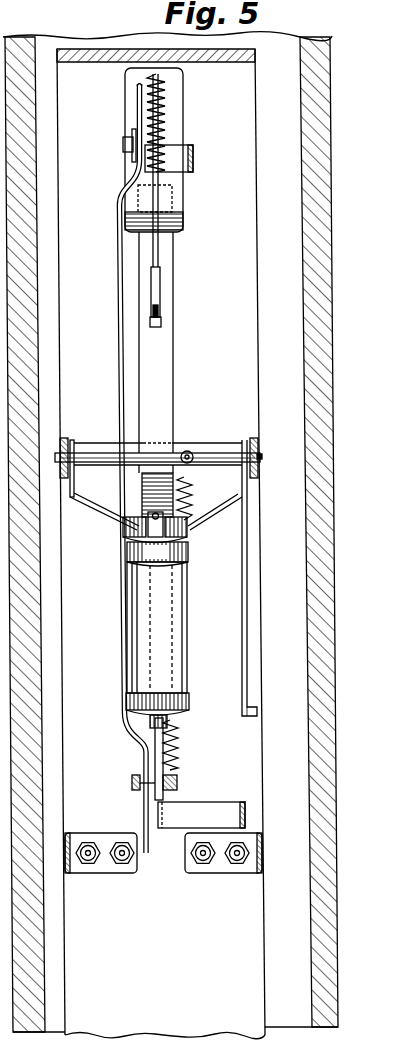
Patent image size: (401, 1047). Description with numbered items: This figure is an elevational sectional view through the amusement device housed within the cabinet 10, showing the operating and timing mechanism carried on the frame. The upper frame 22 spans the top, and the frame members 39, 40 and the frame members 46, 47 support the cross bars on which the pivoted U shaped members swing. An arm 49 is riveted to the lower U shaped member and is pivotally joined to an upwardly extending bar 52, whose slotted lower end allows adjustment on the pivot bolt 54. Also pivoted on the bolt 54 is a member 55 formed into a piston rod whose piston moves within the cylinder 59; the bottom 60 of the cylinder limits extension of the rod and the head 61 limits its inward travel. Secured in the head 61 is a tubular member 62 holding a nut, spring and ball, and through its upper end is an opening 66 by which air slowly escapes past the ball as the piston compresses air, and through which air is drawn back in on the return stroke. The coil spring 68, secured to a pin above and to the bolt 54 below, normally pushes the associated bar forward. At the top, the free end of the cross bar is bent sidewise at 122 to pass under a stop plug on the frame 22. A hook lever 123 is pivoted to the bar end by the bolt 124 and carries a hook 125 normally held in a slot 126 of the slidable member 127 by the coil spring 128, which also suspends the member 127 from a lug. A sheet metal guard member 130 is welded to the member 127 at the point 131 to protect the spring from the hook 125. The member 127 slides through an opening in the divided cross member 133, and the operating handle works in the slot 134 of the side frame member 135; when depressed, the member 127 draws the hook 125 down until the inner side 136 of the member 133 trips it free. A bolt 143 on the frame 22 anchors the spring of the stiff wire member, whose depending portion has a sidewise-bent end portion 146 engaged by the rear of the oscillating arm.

The cabinet 10 is at (316, 455).
The frame 22 is at (226, 61).
The frame member 39 is at (259, 470).
The frame member 40 is at (63, 440).
The frame member 46 is at (263, 853).
The frame member 47 is at (70, 880).
The arm 49 is at (190, 802).
The upwardly extending bar 52 is at (137, 170).
The pivot bolt 54 is at (132, 783).
The member 55 is at (171, 738).
The cylinder 59 is at (145, 605).
The bottom 60 is at (127, 705).
The head 61 is at (126, 552).
The tubular member 62 is at (140, 528).
The opening 66 is at (152, 504).
The coil spring 68 is at (191, 492).
The sidewise bent end 122 is at (190, 164).
The hook lever 123 is at (159, 248).
The bolt 124 is at (123, 144).
The hook 125 is at (158, 310).
The slot 126 is at (161, 325).
The slidable member 127 is at (168, 267).
The coil spring 128 is at (165, 125).
The sheet metal guard member 130 is at (175, 108).
The weld point 131 is at (180, 224).
The divided cross member 133 is at (261, 456).
The slot 134 is at (180, 607).
The side frame member 135 is at (161, 544).
The inner side 136 is at (162, 458).
The bolt 143 is at (234, 633).
The end portion 146 is at (243, 716).